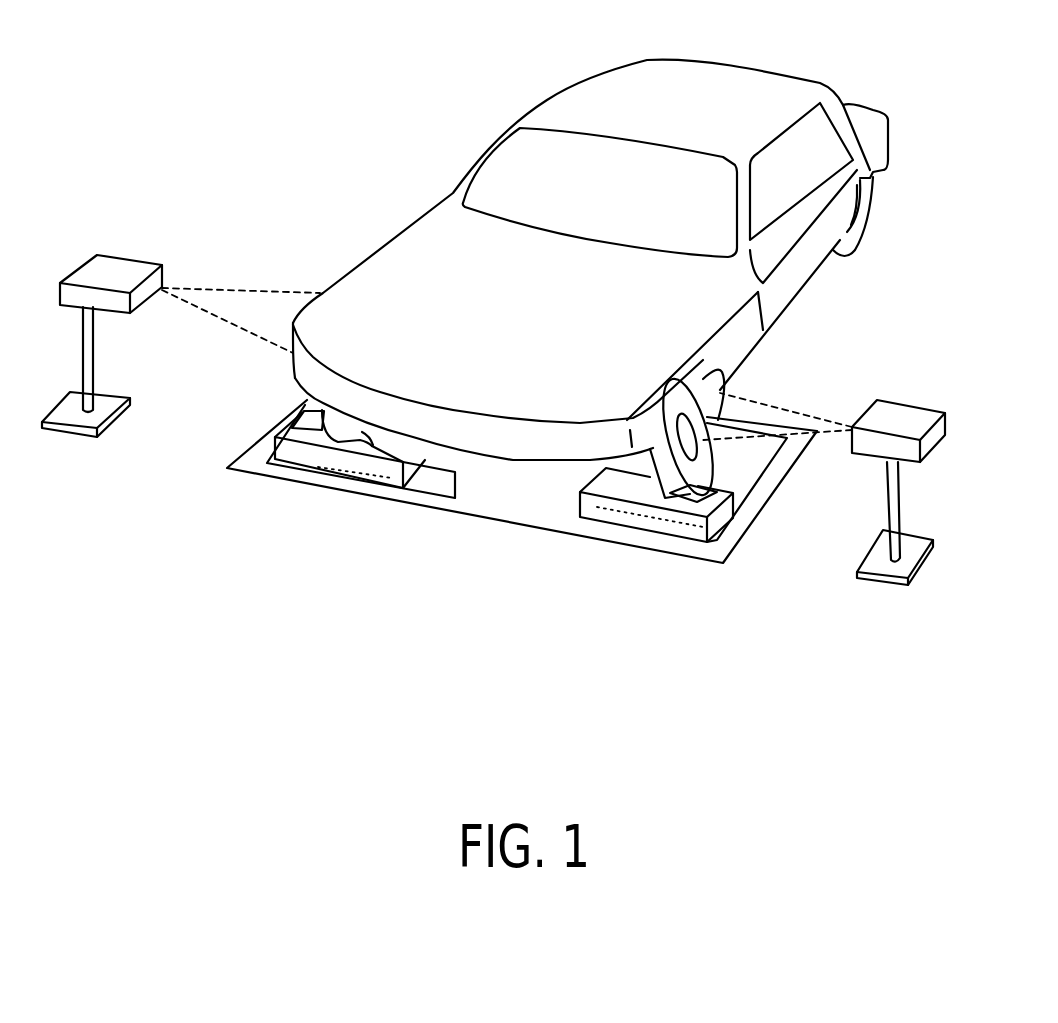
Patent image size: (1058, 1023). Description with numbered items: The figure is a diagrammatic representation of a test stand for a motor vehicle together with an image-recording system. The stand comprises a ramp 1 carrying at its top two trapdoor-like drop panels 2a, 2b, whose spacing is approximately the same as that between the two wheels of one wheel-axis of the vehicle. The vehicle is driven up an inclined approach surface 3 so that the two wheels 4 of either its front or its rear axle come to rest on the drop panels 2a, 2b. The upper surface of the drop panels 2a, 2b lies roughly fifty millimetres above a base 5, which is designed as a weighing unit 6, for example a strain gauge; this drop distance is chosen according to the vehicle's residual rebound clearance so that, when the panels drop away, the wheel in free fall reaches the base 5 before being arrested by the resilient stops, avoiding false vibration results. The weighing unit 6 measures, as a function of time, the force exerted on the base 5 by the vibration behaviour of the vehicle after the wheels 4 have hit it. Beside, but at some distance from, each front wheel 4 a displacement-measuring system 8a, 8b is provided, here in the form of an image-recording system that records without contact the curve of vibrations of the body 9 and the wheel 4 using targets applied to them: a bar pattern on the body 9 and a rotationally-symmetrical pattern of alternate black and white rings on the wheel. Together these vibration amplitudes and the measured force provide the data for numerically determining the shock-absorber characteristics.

The ramp 1 is at (733, 493).
The drop panel 2a is at (690, 498).
The drop panel 2b is at (320, 425).
The inclined approach surface 3 is at (752, 448).
The wheel 4 is at (720, 387).
The base 5 is at (718, 545).
The weighing unit 6 is at (623, 512).
The displacement-measuring system 8a is at (907, 580).
The displacement-measuring system 8b is at (88, 387).
The body 9 is at (767, 100).